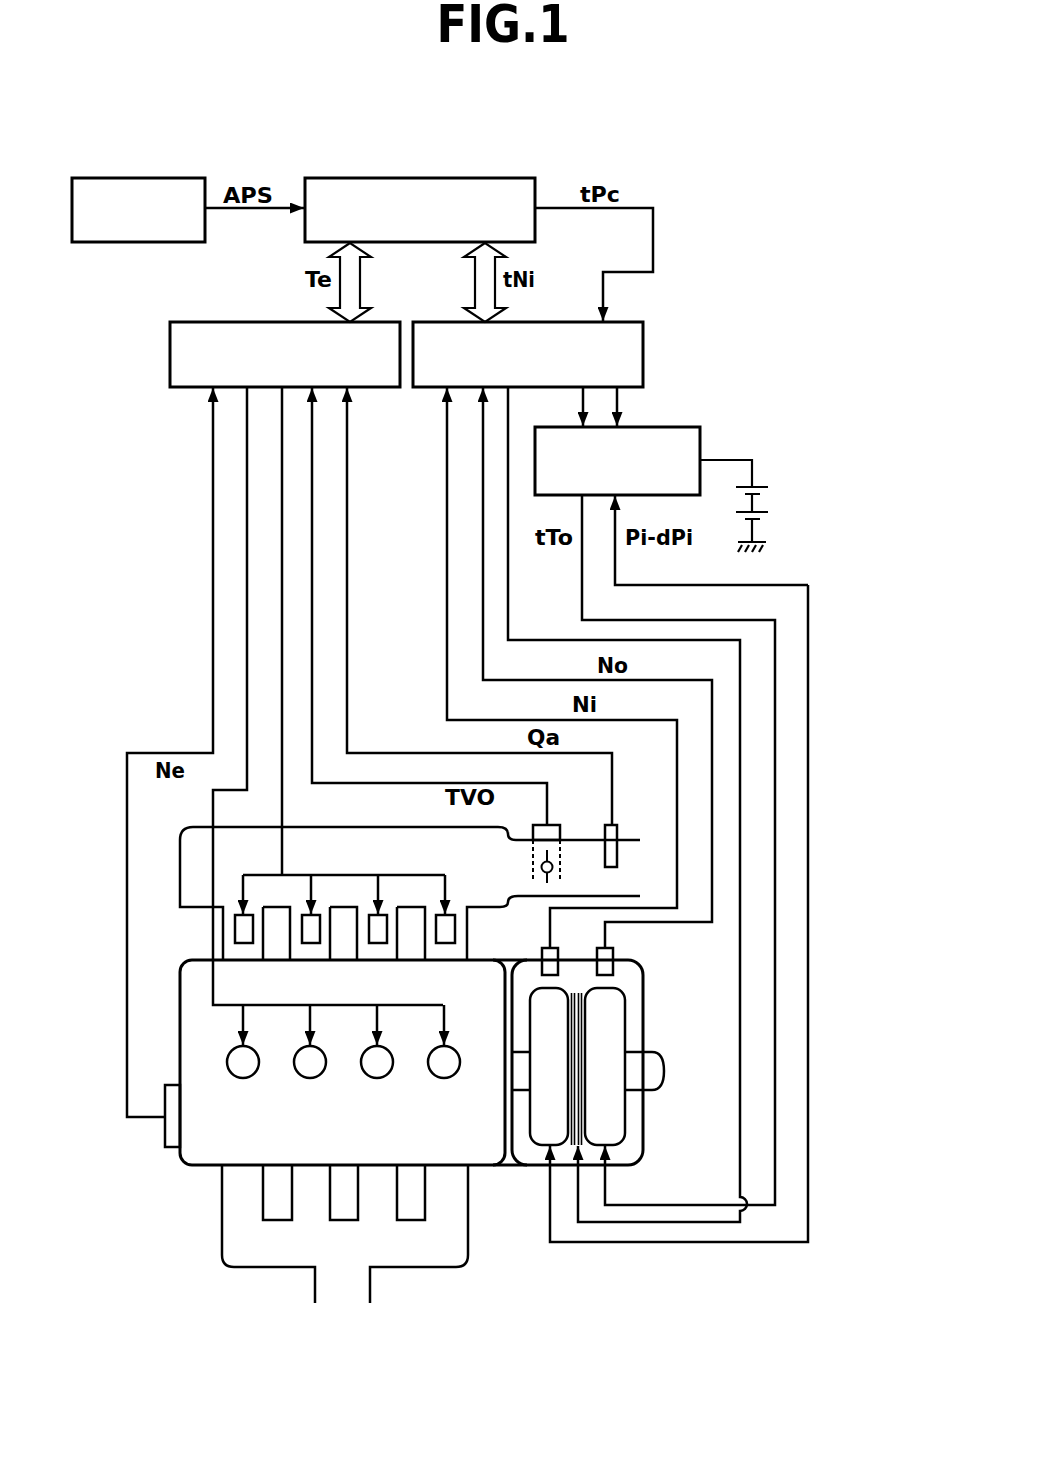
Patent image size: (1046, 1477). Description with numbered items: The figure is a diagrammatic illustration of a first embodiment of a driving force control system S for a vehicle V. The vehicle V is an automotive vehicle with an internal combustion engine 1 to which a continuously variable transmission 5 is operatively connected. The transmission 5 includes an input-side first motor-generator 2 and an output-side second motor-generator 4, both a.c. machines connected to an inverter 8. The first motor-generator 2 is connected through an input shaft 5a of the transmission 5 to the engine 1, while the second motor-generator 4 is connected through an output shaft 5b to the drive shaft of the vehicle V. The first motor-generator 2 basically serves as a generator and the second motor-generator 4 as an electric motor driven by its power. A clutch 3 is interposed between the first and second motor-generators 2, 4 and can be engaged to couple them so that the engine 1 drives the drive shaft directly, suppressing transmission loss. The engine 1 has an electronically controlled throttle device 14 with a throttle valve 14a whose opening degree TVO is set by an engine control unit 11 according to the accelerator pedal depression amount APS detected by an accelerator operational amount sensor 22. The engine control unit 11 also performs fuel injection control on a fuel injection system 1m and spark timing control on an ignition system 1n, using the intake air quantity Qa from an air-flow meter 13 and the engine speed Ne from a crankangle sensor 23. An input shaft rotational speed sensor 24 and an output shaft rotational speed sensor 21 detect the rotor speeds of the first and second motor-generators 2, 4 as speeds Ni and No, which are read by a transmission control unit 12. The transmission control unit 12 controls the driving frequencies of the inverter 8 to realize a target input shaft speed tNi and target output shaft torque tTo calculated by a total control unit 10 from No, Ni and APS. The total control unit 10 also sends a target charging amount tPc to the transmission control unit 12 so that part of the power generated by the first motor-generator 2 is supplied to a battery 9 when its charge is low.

The accelerator operational amount sensor 22 is at (148, 178).
The total control unit 10 is at (455, 178).
The engine control unit 11 is at (232, 322).
The transmission control unit 12 is at (645, 333).
The inverter 8 is at (672, 427).
The battery 9 is at (760, 477).
The air-flow meter 13 is at (617, 826).
The electronically controlled throttle device 14 is at (552, 826).
The throttle valve 14a is at (533, 860).
The internal combustion engine 1 is at (184, 955).
The fuel injection system 1m is at (231, 927).
The ignition system 1n is at (225, 1063).
The crankangle sensor 23 is at (168, 1085).
The input shaft rotational speed sensor 24 is at (578, 940).
The output shaft rotational speed sensor 21 is at (613, 950).
The first motor-generator 2 is at (545, 1148).
The second motor-generator 4 is at (625, 1000).
The clutch 3 is at (580, 1030).
The continuously variable transmission 5 is at (652, 1105).
The input shaft 5a is at (520, 1115).
The output shaft 5b is at (635, 1120).
The driving force control system S is at (858, 671).
The vehicle V is at (174, 1179).